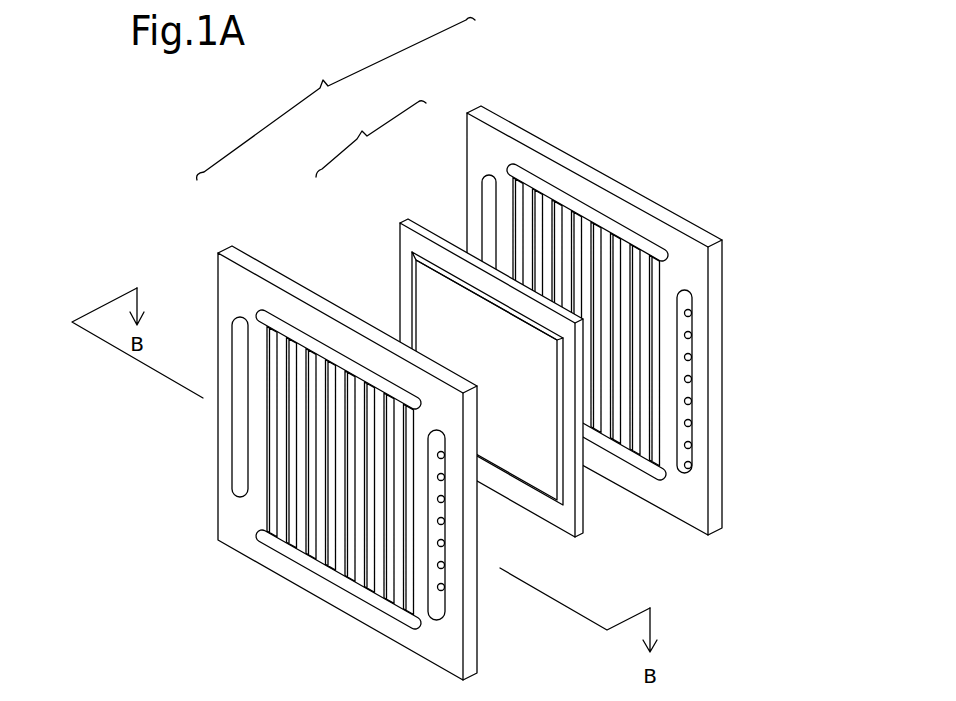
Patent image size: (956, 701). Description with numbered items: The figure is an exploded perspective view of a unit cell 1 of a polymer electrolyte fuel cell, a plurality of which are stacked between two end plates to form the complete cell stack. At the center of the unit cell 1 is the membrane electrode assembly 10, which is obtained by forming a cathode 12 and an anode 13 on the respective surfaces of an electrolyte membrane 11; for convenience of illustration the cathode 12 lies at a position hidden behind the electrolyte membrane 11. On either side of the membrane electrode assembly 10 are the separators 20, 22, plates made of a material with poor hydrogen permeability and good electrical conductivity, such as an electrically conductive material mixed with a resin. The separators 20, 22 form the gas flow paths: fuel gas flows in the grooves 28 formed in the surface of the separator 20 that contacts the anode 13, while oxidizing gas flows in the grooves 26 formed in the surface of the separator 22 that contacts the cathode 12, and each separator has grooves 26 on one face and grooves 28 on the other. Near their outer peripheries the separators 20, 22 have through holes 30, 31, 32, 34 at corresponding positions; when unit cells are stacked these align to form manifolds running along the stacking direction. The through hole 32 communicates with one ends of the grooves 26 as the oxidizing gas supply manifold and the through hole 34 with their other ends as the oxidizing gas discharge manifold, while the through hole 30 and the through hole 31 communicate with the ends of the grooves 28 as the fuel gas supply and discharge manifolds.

The unit cell 1 is at (336, 99).
The membrane electrode assembly 10 is at (449, 319).
The electrolyte membrane 11 is at (411, 218).
The cathode 12 is at (458, 243).
The anode 13 is at (432, 288).
The separator 20 is at (238, 246).
The separator 22 is at (490, 112).
The grooves 26 is at (327, 538).
The grooves 28 is at (437, 495).
The through hole 30 is at (235, 408).
The through hole 31 is at (437, 573).
The through hole 32 is at (290, 330).
The through hole 34 is at (372, 603).